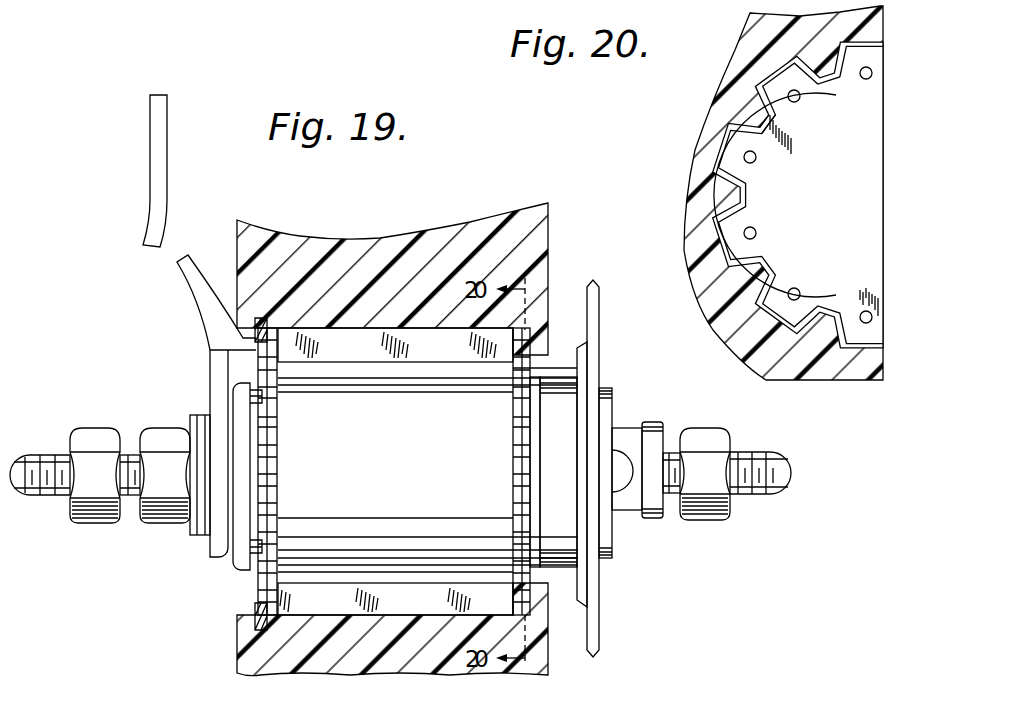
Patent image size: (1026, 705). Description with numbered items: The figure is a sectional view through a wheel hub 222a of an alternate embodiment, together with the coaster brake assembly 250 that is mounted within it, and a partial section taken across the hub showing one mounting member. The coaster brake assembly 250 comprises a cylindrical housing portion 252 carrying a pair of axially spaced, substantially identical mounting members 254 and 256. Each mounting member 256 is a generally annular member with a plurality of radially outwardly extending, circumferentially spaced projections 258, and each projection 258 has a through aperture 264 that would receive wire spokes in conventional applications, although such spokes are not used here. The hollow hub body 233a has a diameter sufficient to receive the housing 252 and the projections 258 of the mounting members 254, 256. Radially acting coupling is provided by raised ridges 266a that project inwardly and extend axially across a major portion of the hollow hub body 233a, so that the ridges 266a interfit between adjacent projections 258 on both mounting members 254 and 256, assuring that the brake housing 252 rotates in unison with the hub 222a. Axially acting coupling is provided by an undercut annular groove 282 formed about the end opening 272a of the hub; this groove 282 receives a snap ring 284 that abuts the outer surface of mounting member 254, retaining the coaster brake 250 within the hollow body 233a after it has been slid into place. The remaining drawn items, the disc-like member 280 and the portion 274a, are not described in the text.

In FIG. 19, the hub 222a is at (447, 262).
In FIG. 20, the hub 222a is at (726, 97).
In FIG. 19, the undercut groove 282 is at (240, 332).
In FIG. 19, the snap ring 284 is at (212, 346).
In FIG. 19, the mounting member 254 is at (272, 362).
In FIG. 19, the coaster brake assembly 250 is at (206, 573).
In FIG. 19, the hollow hub body 233a is at (300, 573).
In FIG. 19, the end opening 272a is at (250, 606).
In FIG. 19, the raised ridges 266a is at (408, 340).
In FIG. 20, the raised ridges 266a is at (784, 106).
In FIG. 19, the cylindrical housing portion 252 is at (406, 472).
In FIG. 19, the mounting member 256 is at (518, 368).
In FIG. 20, the mounting member 256 is at (780, 221).
In FIG. 19, the brake disc 280 is at (548, 598).
In FIG. 20, the through aperture 264 is at (752, 226).
In FIG. 20, the tab 274a is at (745, 133).
In FIG. 20, the projections 258 is at (745, 248).